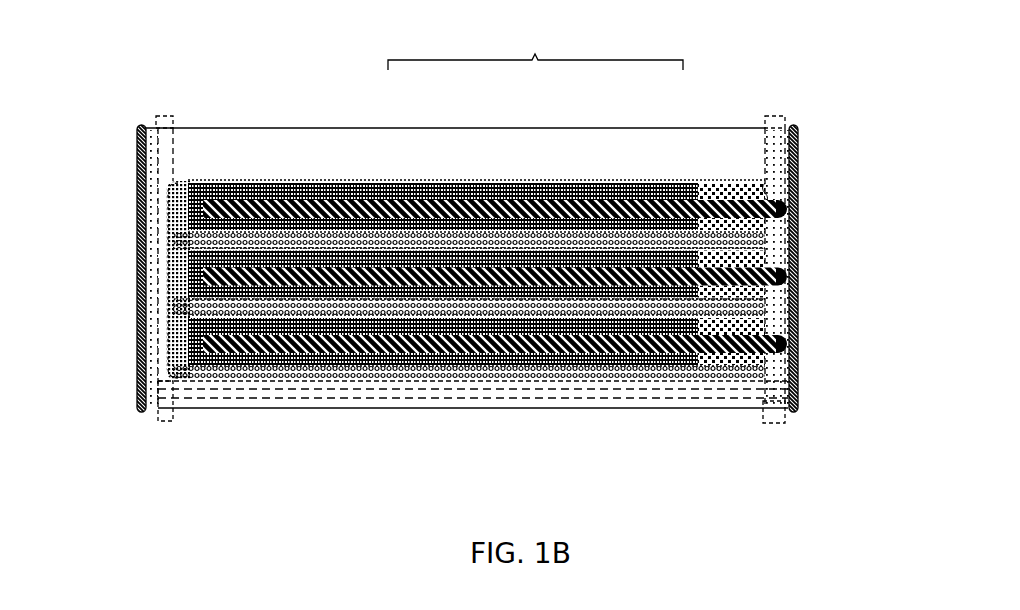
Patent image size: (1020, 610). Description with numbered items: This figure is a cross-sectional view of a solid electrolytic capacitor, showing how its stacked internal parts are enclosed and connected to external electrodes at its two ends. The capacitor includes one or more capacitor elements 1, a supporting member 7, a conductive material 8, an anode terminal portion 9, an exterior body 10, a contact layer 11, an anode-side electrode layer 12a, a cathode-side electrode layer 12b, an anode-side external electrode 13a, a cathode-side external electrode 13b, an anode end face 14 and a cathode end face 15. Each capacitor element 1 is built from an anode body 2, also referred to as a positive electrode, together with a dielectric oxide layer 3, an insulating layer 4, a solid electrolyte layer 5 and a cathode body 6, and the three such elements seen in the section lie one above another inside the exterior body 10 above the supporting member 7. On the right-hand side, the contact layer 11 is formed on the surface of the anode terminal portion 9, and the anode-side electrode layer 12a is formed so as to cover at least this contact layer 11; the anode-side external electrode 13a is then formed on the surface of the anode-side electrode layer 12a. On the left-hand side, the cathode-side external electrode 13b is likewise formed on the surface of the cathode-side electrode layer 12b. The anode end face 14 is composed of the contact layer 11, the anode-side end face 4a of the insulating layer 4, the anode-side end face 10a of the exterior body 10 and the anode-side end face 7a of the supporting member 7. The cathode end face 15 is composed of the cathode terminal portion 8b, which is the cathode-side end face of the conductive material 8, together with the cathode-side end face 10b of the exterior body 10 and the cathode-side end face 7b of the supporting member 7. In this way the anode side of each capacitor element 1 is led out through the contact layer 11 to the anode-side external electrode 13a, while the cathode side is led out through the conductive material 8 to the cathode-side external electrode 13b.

The capacitor element 1 is at (535, 45).
The anode body 2 is at (647, 200).
The dielectric oxide layer 3 is at (583, 185).
The insulating layer 4 is at (710, 173).
The anode-side end face of insulating layer 4a is at (758, 187).
The solid electrolyte layer 5 is at (517, 178).
The cathode body 6 is at (453, 172).
The supporting member 7 is at (720, 392).
The anode-side end face of supporting member 7a is at (755, 378).
The cathode-side end face of supporting member 7b is at (157, 390).
The conductive material 8 is at (168, 200).
The cathode terminal portion 8b is at (160, 258).
The anode terminal portion 9 is at (702, 345).
The exterior body 10 is at (312, 140).
The anode-side end face of exterior body 10a is at (760, 155).
The cathode-side end face of exterior body 10b is at (158, 163).
The contact layer 11 is at (778, 203).
The anode-side electrode layer 12a is at (770, 130).
The cathode-side electrode layer 12b is at (142, 130).
The anode-side external electrode 13a is at (788, 262).
The cathode-side external electrode 13b is at (132, 310).
The anode end face 14 is at (765, 108).
The cathode end face 15 is at (152, 105).